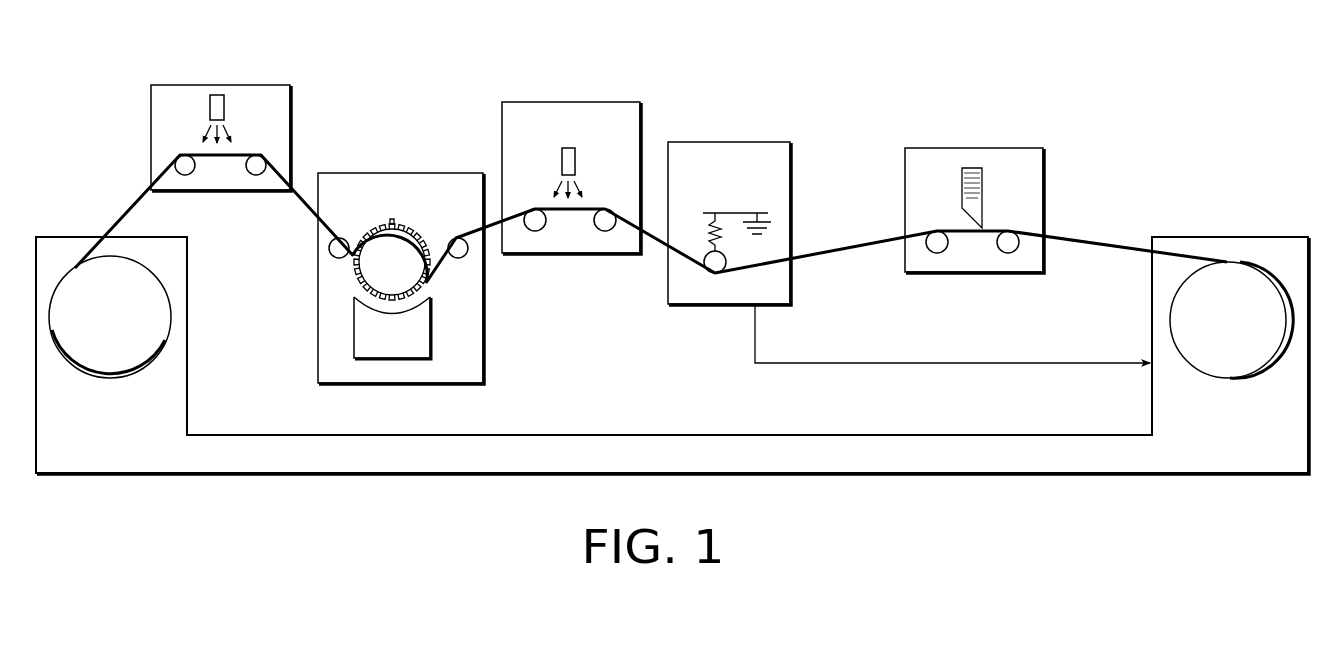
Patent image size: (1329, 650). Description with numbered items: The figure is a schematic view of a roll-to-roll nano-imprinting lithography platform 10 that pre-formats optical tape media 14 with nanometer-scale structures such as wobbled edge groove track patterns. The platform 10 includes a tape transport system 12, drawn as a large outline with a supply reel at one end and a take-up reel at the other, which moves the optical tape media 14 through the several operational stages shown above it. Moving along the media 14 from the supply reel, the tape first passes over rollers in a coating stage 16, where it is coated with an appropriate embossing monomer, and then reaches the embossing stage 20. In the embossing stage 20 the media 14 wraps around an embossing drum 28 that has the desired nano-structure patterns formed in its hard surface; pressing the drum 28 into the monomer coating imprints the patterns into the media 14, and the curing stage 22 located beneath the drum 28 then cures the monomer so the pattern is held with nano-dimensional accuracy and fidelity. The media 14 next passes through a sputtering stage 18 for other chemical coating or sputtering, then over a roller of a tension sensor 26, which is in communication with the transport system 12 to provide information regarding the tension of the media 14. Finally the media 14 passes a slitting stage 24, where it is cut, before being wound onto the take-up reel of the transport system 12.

The platform 10 is at (1115, 48).
The tape transport system 12 is at (1234, 198).
The optical tape media 14 is at (123, 203).
The coating stage 16 is at (220, 190).
The sputtering stage 18 is at (570, 256).
The embossing stage 20 is at (337, 287).
The curing stage 22 is at (391, 358).
The slitting stage 24 is at (975, 273).
The tension sensor 26 is at (702, 306).
The embossing drum 28 is at (416, 232).